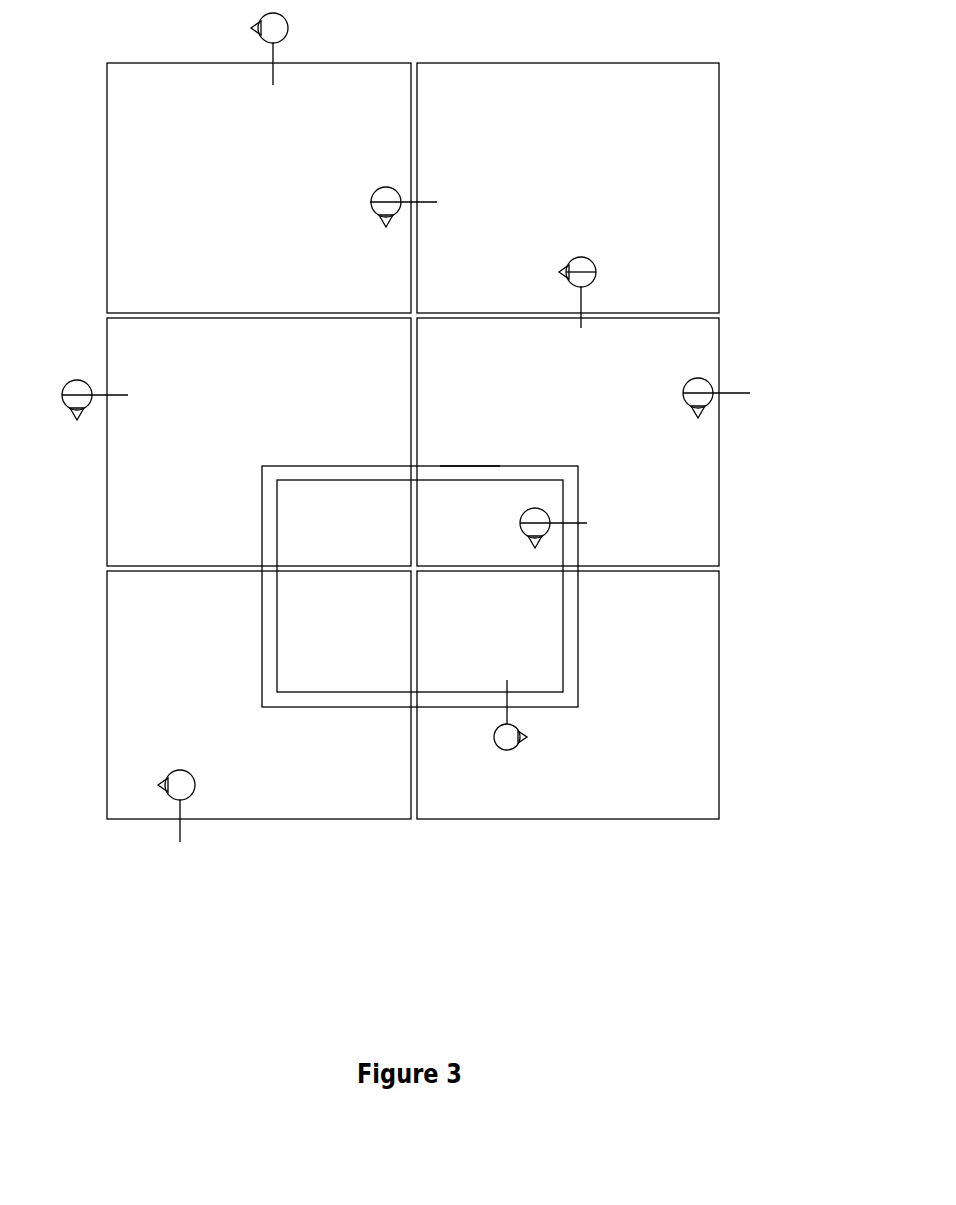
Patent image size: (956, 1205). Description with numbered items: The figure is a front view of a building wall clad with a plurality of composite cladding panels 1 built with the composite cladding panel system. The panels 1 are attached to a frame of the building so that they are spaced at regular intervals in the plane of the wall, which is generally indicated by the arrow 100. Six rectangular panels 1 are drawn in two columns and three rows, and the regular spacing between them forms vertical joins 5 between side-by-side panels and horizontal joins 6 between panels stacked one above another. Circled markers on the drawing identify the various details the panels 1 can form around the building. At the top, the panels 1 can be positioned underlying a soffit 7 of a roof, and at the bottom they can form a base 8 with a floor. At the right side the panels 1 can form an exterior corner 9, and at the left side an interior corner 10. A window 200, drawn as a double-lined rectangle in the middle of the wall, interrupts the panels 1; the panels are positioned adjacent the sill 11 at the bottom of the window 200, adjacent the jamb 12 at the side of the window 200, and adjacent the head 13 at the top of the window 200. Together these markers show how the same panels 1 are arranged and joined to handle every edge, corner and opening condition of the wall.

The composite cladding panel 1 is at (137, 203).
The plane of the wall 100 is at (437, 476).
The window 200 is at (378, 638).
The head of a window 13 is at (469, 515).
The vertical join 5 is at (403, 206).
The horizontal join 6 is at (577, 291).
The soffit 7 is at (269, 49).
The base 8 is at (176, 806).
The exterior corner 9 is at (716, 397).
The interior corner 10 is at (95, 399).
The sill 11 is at (510, 715).
The jamb 12 is at (553, 528).